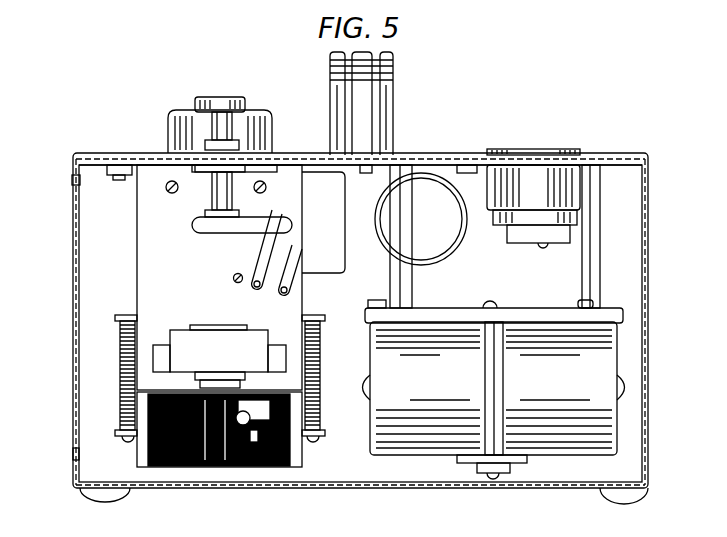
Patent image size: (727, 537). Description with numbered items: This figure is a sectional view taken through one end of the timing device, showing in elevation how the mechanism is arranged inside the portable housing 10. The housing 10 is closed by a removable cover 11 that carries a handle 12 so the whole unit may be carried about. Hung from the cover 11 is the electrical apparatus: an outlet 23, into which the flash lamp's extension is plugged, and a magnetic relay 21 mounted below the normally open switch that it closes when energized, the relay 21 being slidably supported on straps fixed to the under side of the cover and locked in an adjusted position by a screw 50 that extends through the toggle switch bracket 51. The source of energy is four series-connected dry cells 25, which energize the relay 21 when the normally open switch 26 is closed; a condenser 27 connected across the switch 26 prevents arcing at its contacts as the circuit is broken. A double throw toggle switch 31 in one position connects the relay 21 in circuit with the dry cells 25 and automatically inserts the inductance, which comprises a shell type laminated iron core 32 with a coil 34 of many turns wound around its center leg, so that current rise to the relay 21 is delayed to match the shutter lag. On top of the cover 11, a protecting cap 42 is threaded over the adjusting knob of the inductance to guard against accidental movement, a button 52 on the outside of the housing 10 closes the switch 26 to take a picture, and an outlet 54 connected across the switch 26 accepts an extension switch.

The portable housing 10 is at (73, 375).
The removable cover 11 is at (72, 180).
The handle 12 is at (383, 106).
The magnetic relay 21 is at (262, 467).
The outlet 23 is at (608, 153).
The dry cells 25 is at (494, 389).
The normally open switch 26 is at (195, 220).
The condenser 27 is at (440, 245).
The double throw toggle switch 31 is at (183, 467).
The laminated iron core 32 is at (220, 467).
The coil 34 is at (120, 350).
The protecting cap 42 is at (168, 125).
The screw 50 is at (236, 283).
The toggle switch bracket 51 is at (226, 277).
The button 52 is at (220, 97).
The outlet 54 is at (527, 152).